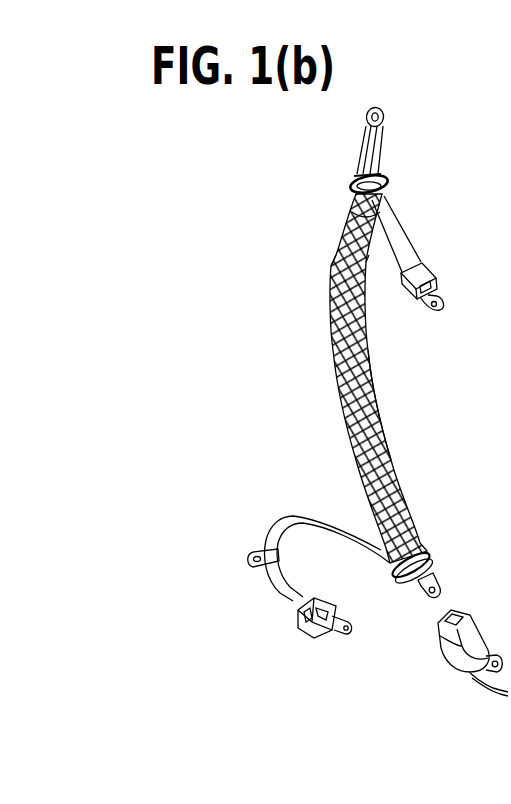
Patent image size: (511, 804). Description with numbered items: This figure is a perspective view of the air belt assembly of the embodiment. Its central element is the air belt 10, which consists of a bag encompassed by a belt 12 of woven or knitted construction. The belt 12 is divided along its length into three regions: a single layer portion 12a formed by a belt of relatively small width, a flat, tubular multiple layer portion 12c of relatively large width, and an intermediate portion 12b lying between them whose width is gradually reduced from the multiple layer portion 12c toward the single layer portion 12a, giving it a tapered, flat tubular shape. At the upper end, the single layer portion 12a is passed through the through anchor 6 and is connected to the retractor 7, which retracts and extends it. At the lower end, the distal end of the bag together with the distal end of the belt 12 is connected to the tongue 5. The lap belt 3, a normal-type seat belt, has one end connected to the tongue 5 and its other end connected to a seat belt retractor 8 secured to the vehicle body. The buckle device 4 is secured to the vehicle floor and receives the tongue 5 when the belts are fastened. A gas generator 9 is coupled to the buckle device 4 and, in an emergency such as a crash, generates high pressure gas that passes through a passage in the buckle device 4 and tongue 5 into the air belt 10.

The lap belt 3 is at (305, 518).
The buckle device 4 is at (478, 628).
The tongue 5 is at (440, 585).
The through anchor 6 is at (397, 192).
The retractor 7 is at (428, 283).
The seat belt retractor (ELR) 8 is at (305, 626).
The gas generator 9 is at (458, 672).
The air belt 10 is at (380, 405).
The belt 12 is at (342, 378).
The single layer portion 12a is at (346, 210).
The intermediate portion 12b is at (336, 258).
The multiple layer portion 12c is at (368, 360).